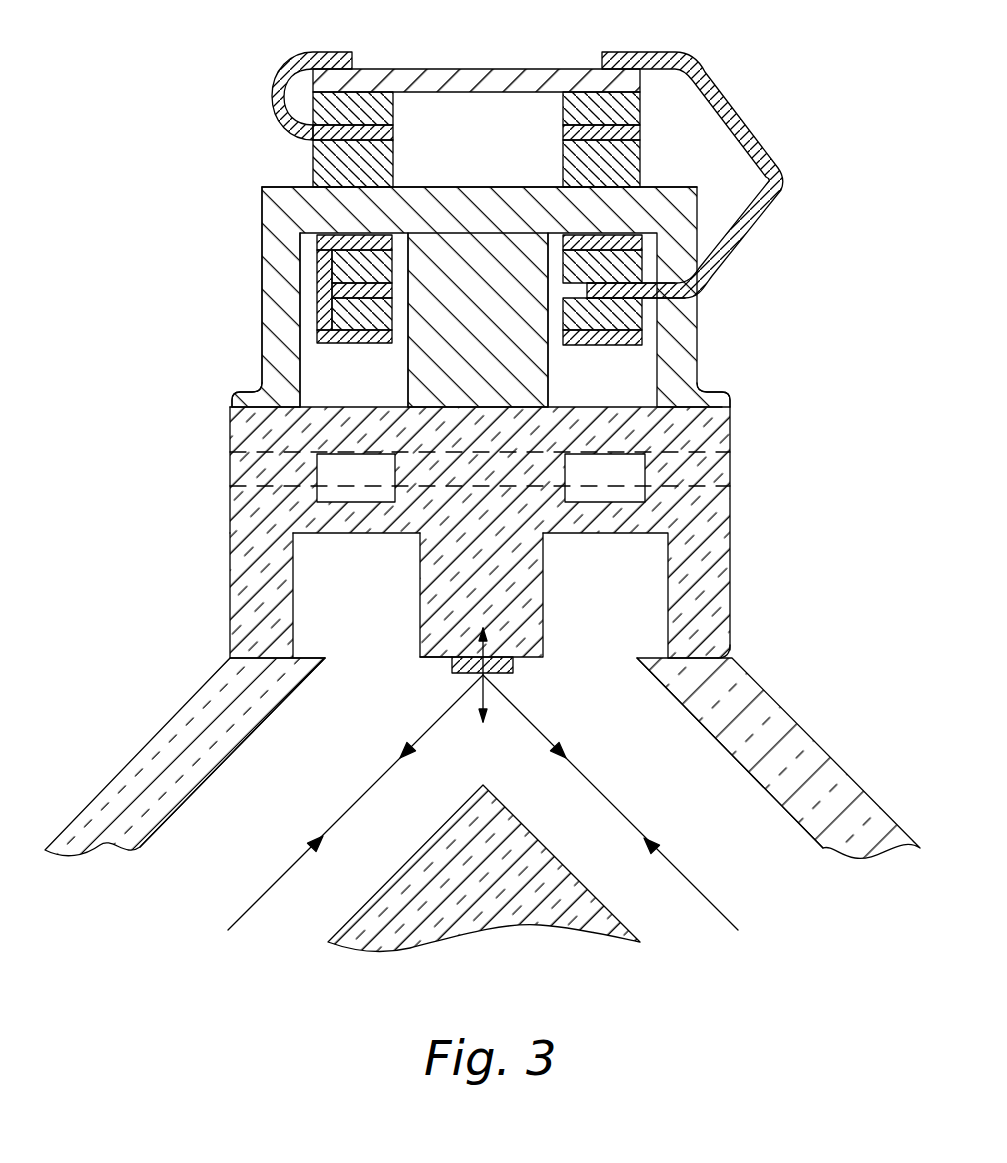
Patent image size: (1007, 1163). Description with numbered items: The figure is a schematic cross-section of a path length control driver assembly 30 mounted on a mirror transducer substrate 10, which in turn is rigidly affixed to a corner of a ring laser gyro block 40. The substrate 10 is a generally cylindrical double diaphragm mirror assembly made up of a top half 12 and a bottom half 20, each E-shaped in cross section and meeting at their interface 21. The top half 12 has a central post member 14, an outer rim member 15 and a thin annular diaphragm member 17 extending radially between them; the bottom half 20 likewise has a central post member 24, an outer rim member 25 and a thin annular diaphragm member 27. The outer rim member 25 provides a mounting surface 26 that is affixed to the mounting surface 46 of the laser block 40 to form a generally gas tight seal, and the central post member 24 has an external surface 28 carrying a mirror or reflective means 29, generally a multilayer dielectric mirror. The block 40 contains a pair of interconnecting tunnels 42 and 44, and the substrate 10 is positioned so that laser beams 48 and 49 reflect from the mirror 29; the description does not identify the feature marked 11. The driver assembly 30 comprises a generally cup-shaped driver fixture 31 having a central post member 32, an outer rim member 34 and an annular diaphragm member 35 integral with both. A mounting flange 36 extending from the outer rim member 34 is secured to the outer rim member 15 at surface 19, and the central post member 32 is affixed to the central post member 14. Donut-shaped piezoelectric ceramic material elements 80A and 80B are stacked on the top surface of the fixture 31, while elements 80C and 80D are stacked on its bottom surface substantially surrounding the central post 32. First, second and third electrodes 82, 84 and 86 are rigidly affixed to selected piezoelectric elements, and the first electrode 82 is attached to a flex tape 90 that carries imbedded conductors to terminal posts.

The mirror transducer substrate 10 is at (750, 520).
The optical axis 11 is at (481, 712).
The top half 12 is at (230, 477).
The central post member 14 is at (493, 482).
The outer rim member 15 is at (703, 486).
The thin annular diaphragm member 17 is at (370, 446).
The surface 19 is at (733, 412).
The bottom half 20 is at (230, 588).
The interface 21 is at (730, 452).
The central post member 24 is at (497, 597).
The outer rim member 25 is at (715, 606).
The mounting surface 26 is at (731, 654).
The thin annular diaphragm member 27 is at (365, 529).
The external surface 28 is at (440, 662).
The mirror or reflective means 29 is at (516, 668).
The path length control driver assembly 30 is at (737, 285).
The cup-shaped driver fixture 31 is at (262, 240).
The central post member 32 is at (492, 307).
The outer rim member 34 is at (294, 324).
The annular diaphragm member 35 is at (365, 227).
The mounting flange 36 is at (250, 389).
The ring laser gyro block 40 is at (150, 742).
The interconnecting tunnel 42 is at (215, 882).
The interconnecting tunnel 44 is at (733, 846).
The mounting surface 46 is at (706, 662).
The laser beam 48 is at (608, 797).
The laser beam 49 is at (328, 829).
The piezoelectric ceramic material element 80A is at (393, 108).
The piezoelectric ceramic material element 80B is at (393, 165).
The piezoelectric ceramic material element 80C is at (396, 278).
The piezoelectric ceramic material element 80D is at (565, 322).
The first electrode 82 is at (273, 108).
The second electrode 84 is at (757, 137).
The third electrode 86 is at (317, 345).
The flex tape 90 is at (527, 69).